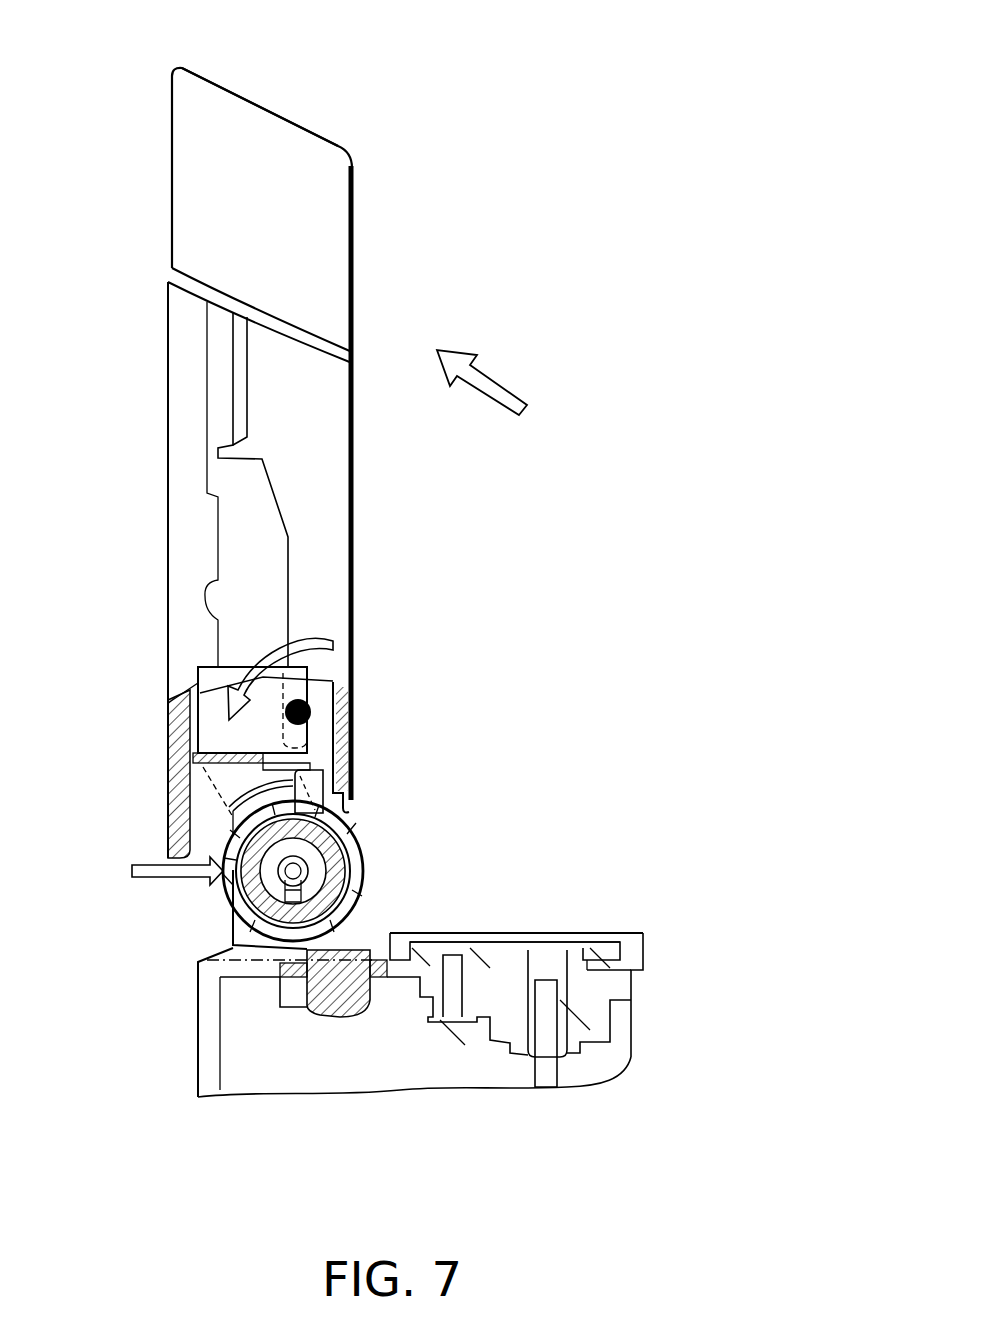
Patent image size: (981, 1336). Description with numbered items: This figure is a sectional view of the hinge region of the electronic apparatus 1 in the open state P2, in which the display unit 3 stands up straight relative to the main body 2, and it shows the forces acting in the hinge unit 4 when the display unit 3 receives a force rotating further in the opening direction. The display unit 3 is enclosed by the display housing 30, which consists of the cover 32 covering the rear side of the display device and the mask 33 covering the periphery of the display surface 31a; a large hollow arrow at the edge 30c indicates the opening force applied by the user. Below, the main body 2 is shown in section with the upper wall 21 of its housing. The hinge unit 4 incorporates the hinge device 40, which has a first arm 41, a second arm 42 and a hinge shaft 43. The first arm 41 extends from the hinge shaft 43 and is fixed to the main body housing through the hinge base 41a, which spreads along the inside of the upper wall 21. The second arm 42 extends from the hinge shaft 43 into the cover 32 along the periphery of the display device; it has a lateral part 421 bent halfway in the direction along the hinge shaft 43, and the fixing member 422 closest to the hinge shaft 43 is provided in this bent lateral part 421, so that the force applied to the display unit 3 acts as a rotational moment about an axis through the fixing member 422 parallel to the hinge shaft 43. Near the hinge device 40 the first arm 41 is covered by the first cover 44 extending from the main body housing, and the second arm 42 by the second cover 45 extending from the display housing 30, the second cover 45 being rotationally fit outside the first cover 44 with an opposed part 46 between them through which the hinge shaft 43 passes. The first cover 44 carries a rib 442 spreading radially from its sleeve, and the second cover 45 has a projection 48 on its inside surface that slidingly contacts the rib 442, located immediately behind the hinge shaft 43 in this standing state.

The electronic apparatus 1 is at (710, 200).
The main body 2 is at (242, 1097).
The display unit 3 is at (300, 153).
The hinge unit 4 is at (481, 784).
The upper wall 21 is at (594, 950).
The display housing 30 is at (162, 208).
The edge 30c is at (242, 96).
The display surface 31a is at (366, 398).
The cover 32 is at (167, 358).
The mask 33 is at (340, 724).
The hinge device 40 is at (218, 934).
The first arm 41 is at (362, 903).
The hinge base 41a is at (597, 1033).
The second arm 42 is at (222, 475).
The lateral part 421 is at (220, 665).
The fixing member 422 is at (300, 673).
The hinge shaft 43 is at (280, 862).
The first cover 44 is at (236, 898).
The second cover 45 is at (364, 837).
The opposed part 46 is at (368, 819).
The projection 48 is at (222, 882).
The rib 442 is at (345, 825).
The open state P2 is at (396, 224).